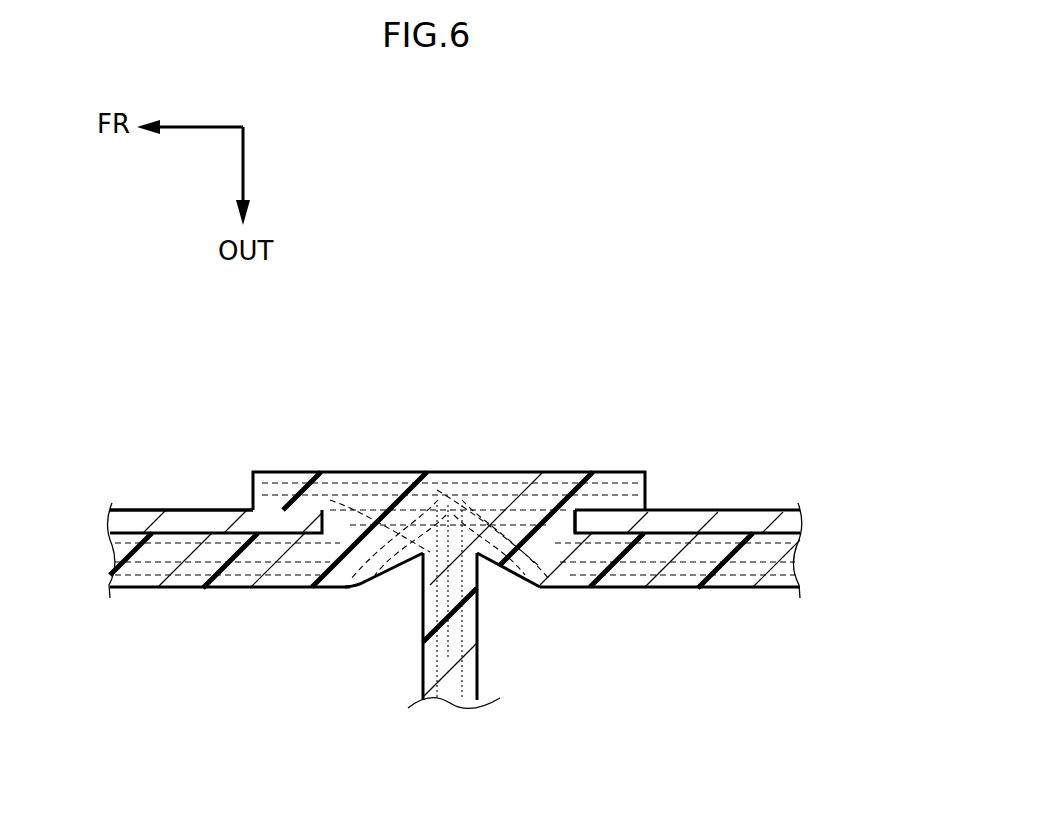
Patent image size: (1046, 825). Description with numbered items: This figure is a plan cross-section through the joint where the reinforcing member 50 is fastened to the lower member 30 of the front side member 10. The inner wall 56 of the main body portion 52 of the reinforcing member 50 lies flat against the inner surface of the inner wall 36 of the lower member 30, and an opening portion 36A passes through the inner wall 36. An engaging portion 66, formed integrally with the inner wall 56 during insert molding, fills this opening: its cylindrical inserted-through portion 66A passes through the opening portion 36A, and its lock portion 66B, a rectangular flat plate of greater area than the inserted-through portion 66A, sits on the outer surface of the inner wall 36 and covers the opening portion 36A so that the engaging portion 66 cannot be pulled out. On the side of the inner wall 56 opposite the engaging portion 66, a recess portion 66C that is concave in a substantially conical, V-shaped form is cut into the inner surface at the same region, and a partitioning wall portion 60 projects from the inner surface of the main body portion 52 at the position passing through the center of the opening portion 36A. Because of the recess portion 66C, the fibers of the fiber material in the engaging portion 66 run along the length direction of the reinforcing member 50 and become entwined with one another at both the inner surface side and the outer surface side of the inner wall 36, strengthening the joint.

The vehicle body joint structure 10 is at (441, 551).
The lower member 30 is at (125, 508).
The inner wall 36 is at (188, 508).
The opening portion 36A is at (567, 535).
The reinforcing member 50 is at (712, 592).
The main body portion 52 is at (235, 588).
The inner wall 56 is at (230, 612).
The partitioning wall portion 60 is at (480, 660).
The engaging portion 66 is at (448, 471).
The inserted-through portion 66A is at (357, 485).
The lock portion 66B is at (553, 490).
The recess portion 66C is at (402, 588).